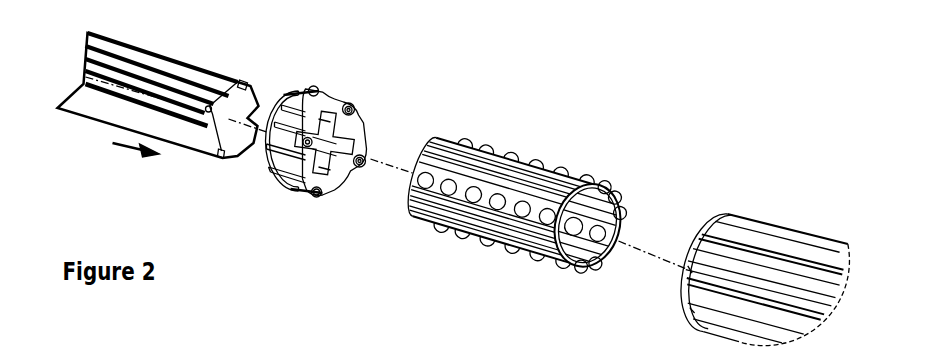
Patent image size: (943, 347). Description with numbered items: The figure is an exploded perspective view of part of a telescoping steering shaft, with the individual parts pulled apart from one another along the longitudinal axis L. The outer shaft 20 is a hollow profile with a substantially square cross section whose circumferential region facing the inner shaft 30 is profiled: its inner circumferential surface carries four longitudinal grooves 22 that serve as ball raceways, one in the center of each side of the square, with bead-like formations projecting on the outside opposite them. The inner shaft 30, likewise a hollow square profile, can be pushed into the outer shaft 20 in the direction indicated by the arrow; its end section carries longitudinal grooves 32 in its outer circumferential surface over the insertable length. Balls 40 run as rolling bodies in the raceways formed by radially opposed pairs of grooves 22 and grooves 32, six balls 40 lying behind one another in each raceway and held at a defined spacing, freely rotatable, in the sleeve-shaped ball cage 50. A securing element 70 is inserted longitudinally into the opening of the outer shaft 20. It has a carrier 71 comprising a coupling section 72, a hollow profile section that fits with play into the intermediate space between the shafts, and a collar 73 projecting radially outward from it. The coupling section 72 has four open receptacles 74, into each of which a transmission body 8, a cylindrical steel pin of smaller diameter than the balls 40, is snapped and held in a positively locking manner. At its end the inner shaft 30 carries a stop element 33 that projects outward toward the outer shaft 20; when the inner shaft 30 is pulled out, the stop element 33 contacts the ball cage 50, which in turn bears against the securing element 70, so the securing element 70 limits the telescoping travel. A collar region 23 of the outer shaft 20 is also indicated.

The outer shaft 20 is at (718, 238).
The grooves 22 is at (692, 320).
The collar 23 is at (703, 230).
The inner shaft 30 is at (158, 109).
The grooves 32 is at (154, 78).
The stop element 33 is at (200, 93).
The balls 40 is at (547, 224).
The ball cage 50 is at (516, 192).
The securing element 70 is at (304, 137).
The carrier 71 is at (340, 200).
The coupling section 72 is at (308, 90).
The collar 73 is at (290, 88).
The receptacles 74 is at (348, 108).
The transmission body 8 is at (338, 92).
The longitudinal axis L is at (661, 248).